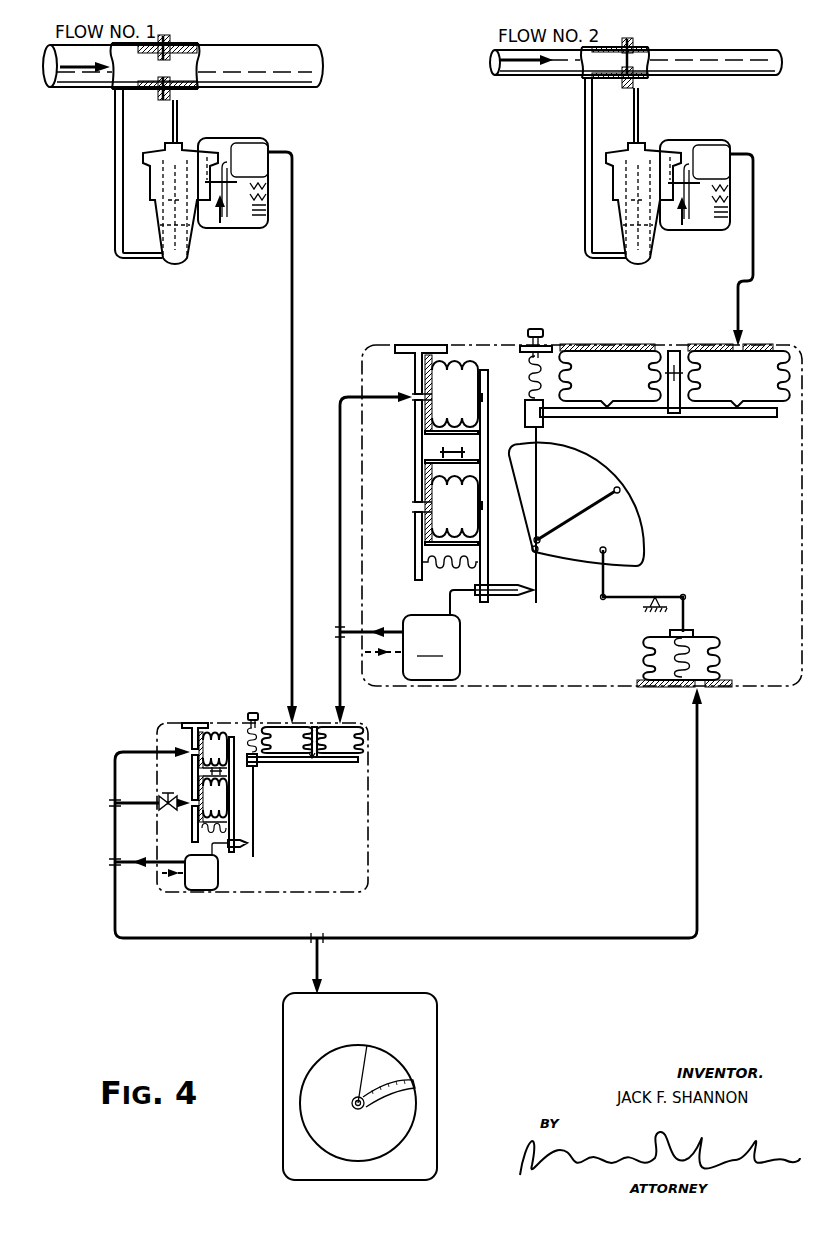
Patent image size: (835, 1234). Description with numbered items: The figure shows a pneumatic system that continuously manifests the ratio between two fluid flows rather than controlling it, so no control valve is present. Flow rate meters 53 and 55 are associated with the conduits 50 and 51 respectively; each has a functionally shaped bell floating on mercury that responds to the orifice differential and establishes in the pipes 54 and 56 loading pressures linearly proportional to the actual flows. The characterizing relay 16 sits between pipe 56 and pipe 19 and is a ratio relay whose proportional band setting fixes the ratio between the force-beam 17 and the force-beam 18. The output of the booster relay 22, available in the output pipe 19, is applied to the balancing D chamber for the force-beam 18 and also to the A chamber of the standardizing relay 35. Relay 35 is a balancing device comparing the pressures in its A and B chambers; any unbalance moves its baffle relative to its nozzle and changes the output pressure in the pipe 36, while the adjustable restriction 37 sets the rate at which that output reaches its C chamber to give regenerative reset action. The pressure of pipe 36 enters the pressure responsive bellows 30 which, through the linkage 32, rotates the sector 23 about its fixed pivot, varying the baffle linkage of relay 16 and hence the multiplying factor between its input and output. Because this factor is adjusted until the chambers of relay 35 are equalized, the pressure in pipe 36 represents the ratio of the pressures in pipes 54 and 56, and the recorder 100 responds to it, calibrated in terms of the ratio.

The characterizing relay 16 is at (488, 343).
The force-beam 17 is at (730, 418).
The force-beam 18 is at (488, 390).
The output pipe 19 is at (340, 536).
The booster relay 22 is at (397, 647).
The sector 23 is at (643, 522).
The pressure responsive bellows 30 is at (718, 663).
The linkage 32 is at (668, 593).
The standardizing relay 35 is at (370, 825).
The output pipe 36 is at (568, 938).
The adjustable restriction 37 is at (168, 813).
The conduit 50 is at (285, 45).
The conduit 51 is at (751, 50).
The flow rate meter 53 is at (253, 138).
The pipe 54 is at (293, 284).
The flow rate meter 55 is at (712, 140).
The pipe 56 is at (737, 287).
The recorder 100 is at (437, 1043).